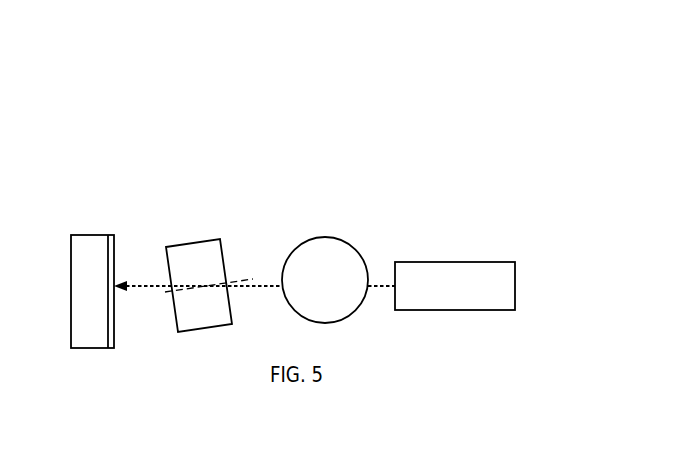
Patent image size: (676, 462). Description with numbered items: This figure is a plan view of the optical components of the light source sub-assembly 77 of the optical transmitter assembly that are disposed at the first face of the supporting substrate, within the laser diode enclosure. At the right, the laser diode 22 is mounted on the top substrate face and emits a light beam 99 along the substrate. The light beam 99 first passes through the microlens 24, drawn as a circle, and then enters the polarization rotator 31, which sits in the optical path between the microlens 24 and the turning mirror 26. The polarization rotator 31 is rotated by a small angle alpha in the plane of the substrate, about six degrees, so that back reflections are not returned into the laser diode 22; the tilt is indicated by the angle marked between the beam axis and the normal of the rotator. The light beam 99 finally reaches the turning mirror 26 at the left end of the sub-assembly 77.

The light source sub-assembly 77 is at (257, 141).
The turning mirror 26 is at (110, 235).
The polarization rotator 31 is at (207, 240).
The microlens 24 is at (320, 237).
The light beam 99 is at (376, 285).
The laser diode 22 is at (458, 262).